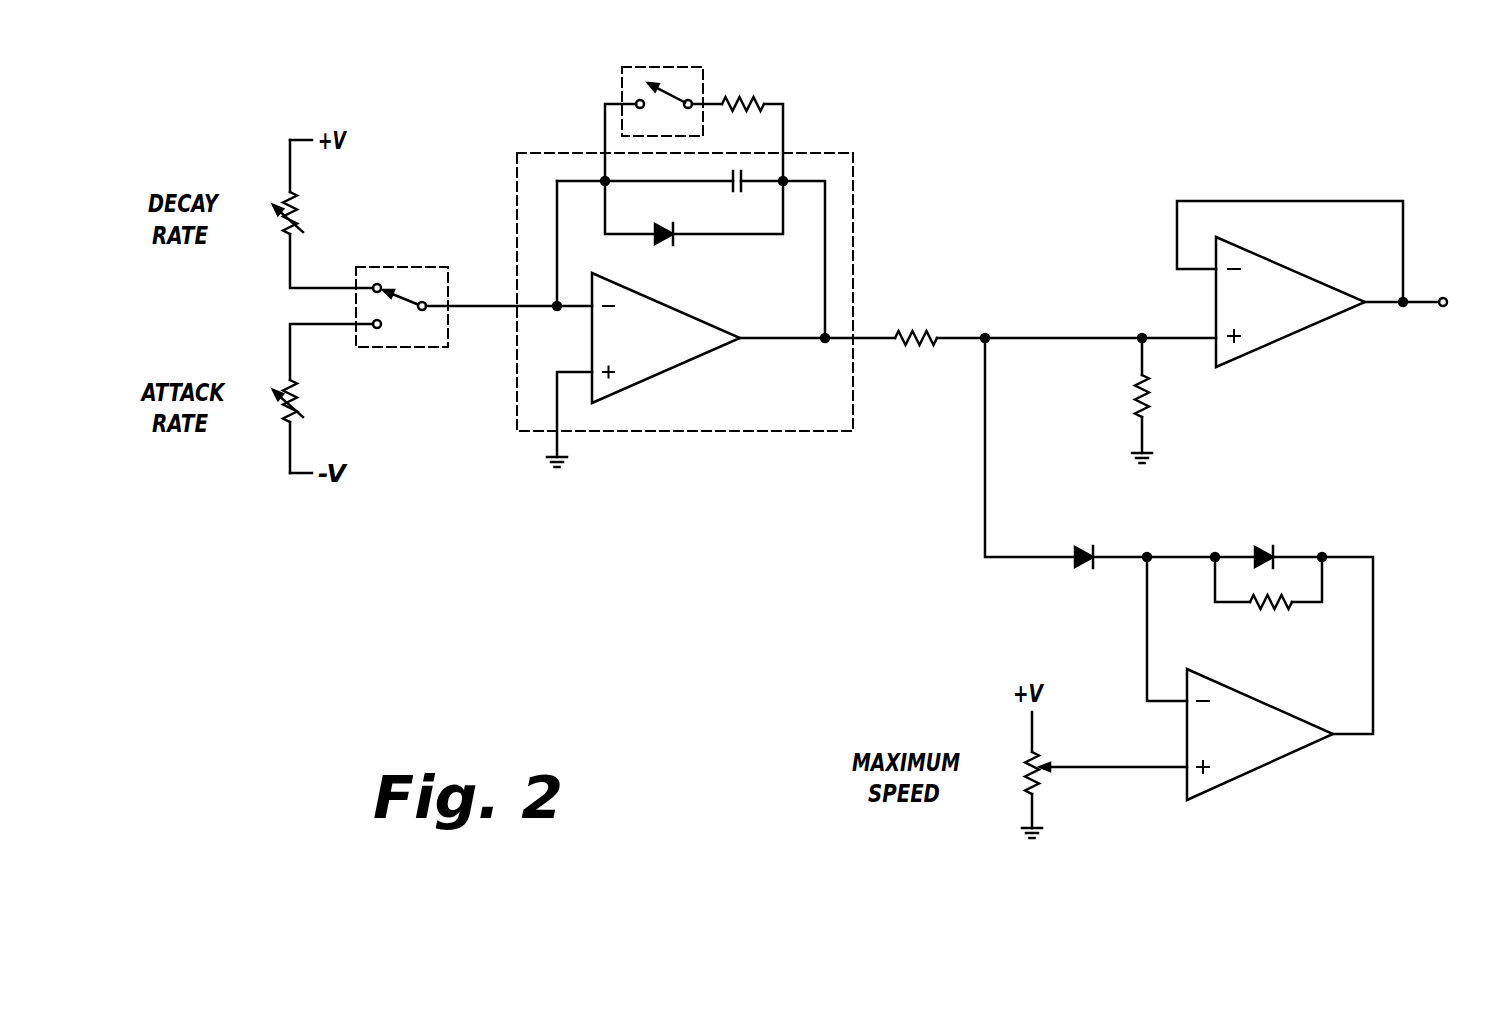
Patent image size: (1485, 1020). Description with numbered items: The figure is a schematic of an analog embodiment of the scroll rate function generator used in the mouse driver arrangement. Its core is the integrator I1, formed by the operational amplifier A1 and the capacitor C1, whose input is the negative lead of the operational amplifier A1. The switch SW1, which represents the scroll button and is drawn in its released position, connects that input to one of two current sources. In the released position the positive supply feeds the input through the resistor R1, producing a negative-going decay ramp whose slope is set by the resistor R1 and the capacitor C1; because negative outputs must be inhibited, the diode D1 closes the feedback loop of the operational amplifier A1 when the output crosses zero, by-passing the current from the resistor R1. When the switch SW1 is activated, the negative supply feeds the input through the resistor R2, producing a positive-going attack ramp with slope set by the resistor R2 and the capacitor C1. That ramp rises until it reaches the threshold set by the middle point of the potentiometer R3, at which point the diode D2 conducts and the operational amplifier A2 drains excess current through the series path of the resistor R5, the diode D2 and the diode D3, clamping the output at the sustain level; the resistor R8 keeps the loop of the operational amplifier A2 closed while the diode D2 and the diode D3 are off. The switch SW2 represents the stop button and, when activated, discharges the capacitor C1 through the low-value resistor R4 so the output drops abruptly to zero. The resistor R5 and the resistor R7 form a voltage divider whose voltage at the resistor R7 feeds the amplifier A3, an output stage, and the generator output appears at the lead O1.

The resistor R1 is at (306, 214).
The resistor R2 is at (306, 398).
The potentiometer R3 is at (1019, 775).
The resistor R4 is at (737, 125).
The resistor R5 is at (1055, 322).
The resistor R7 is at (1159, 400).
The resistor R8 is at (1268, 599).
The switch SW1 is at (402, 291).
The switch SW2 is at (654, 109).
The diode D1 is at (694, 213).
The diode D2 is at (1087, 541).
The diode D3 is at (1268, 541).
The capacitor C1 is at (737, 196).
The operational amplifier A1 is at (743, 338).
The operational amplifier A2 is at (1190, 678).
The amplifier A3 is at (1308, 284).
The integrator I1 is at (685, 292).
The output lead O1 is at (1462, 302).